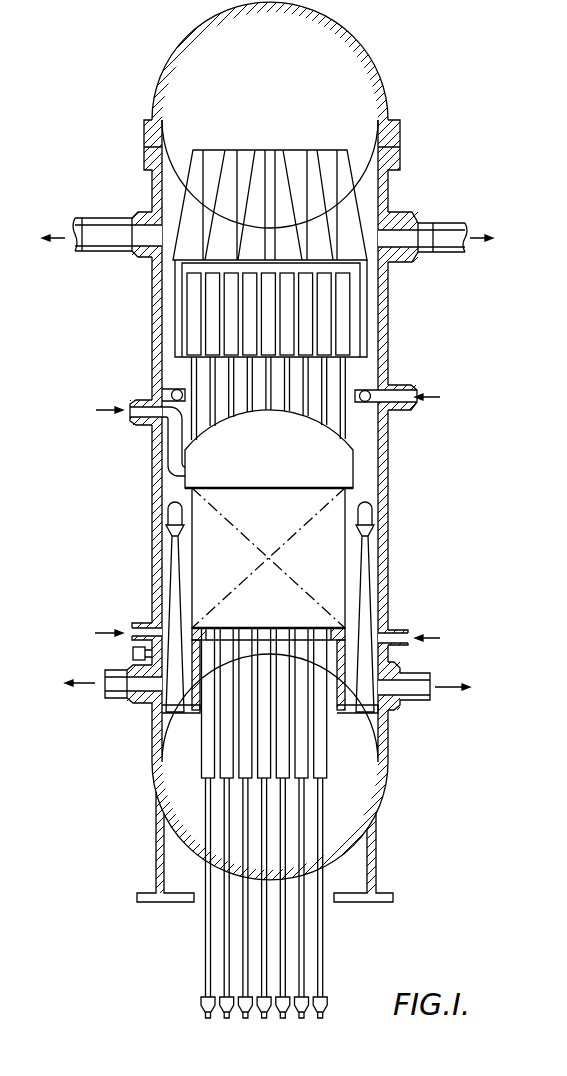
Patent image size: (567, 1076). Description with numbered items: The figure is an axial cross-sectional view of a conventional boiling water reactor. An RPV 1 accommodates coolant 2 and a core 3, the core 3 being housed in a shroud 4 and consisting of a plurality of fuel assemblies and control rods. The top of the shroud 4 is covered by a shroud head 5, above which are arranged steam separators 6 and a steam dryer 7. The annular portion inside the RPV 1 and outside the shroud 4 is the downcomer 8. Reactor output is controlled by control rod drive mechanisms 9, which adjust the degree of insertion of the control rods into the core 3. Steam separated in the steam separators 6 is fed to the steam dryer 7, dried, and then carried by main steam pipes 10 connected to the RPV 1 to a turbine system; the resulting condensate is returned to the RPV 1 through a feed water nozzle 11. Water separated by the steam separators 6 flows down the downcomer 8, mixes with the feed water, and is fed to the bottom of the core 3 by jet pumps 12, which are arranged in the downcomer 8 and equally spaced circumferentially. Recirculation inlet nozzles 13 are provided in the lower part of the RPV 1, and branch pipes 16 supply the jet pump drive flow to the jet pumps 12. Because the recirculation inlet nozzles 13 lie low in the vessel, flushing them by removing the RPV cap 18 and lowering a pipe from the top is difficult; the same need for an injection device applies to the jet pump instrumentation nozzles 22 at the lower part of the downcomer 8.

The RPV 1 is at (387, 527).
The coolant 2 is at (368, 432).
The core 3 is at (328, 586).
The shroud 4 is at (350, 620).
The shroud head 5 is at (357, 470).
The steam separators 6 is at (344, 338).
The steam dryer 7 is at (345, 210).
The downcomer 8 is at (363, 482).
The control rod drive mechanisms 9 is at (325, 955).
The main steam pipes 10 is at (87, 217).
The feed water nozzle 11 is at (413, 380).
The jet pumps 12 is at (360, 707).
The recirculation inlet nozzles 13 is at (412, 628).
The branch pipes 16 is at (367, 520).
The RPV cap 18 is at (368, 57).
The jet pump instrumentation nozzles 22 is at (133, 652).